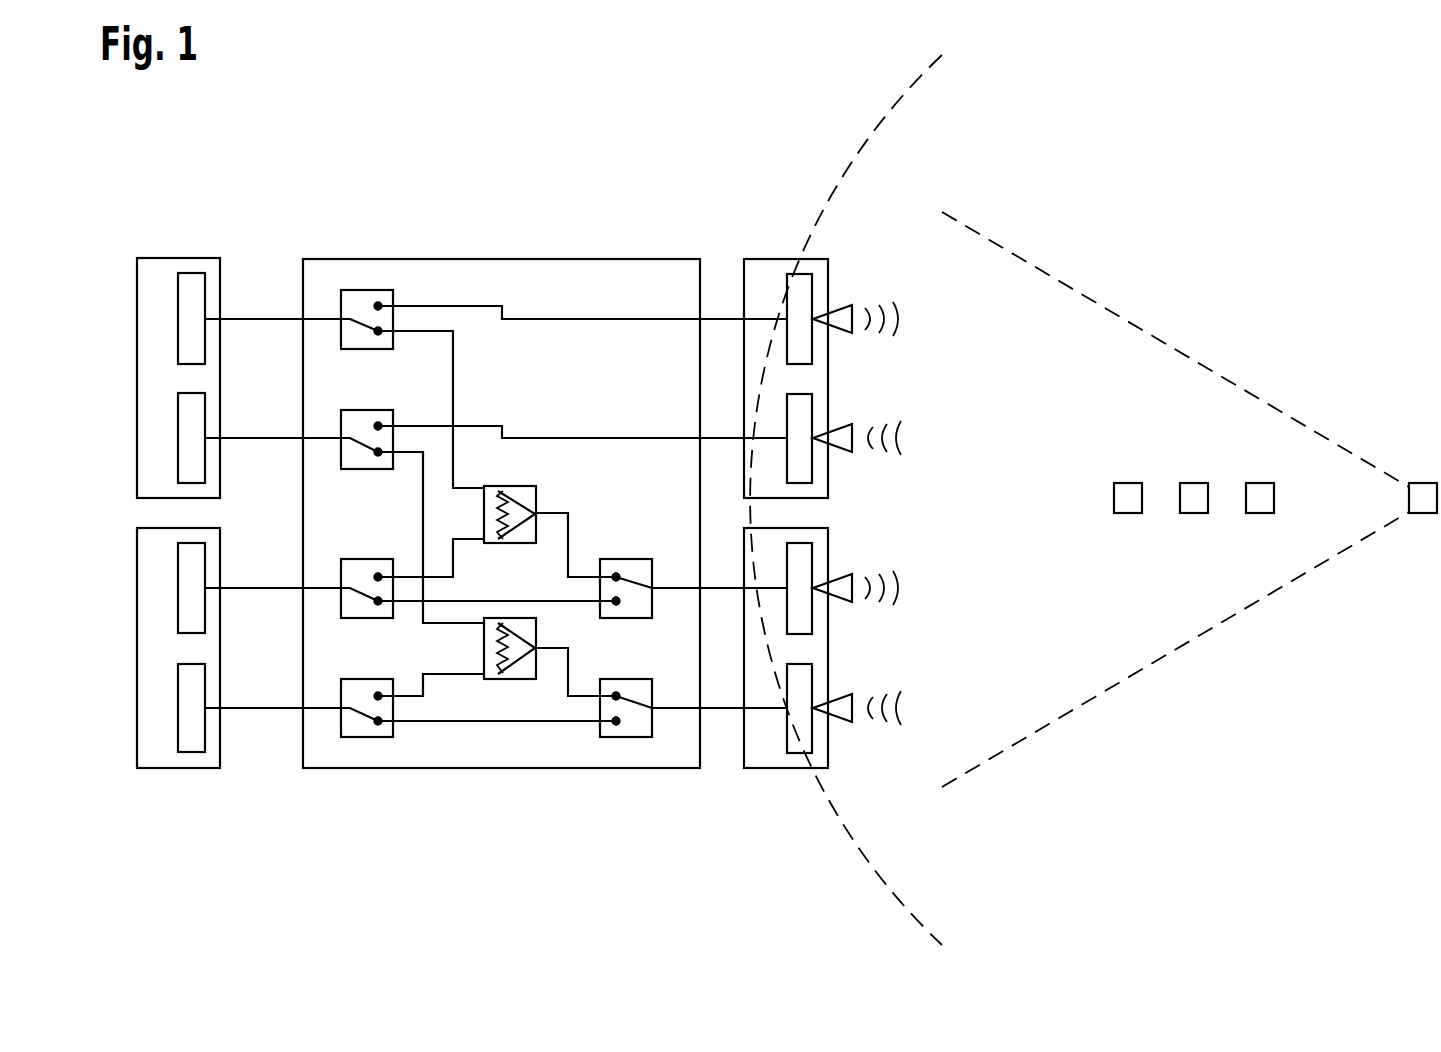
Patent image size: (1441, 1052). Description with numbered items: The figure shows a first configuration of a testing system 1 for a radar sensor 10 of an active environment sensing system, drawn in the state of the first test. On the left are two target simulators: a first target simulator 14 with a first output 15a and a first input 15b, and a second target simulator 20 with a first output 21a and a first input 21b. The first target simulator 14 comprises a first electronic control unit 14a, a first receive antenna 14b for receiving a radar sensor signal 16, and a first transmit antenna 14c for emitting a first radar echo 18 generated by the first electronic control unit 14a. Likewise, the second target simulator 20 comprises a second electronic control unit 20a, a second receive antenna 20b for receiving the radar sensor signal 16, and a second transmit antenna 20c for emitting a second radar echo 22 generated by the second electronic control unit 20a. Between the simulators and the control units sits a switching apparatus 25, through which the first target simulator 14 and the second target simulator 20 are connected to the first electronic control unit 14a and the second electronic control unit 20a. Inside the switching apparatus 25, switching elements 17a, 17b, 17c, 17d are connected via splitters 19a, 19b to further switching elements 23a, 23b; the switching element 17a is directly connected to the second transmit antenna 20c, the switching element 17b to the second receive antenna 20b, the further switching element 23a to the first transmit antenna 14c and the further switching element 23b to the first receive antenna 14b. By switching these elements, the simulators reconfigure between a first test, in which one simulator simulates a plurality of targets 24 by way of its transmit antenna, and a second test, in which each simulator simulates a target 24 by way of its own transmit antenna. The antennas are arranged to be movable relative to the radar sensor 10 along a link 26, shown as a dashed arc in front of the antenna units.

The testing system 1 is at (540, 497).
The radar sensor 10 is at (1423, 464).
The first target simulator 14 is at (151, 648).
The first electronic control unit 14a is at (786, 677).
The first receive antenna 14b is at (892, 707).
The first transmit antenna 14c is at (892, 588).
The first output 15a is at (143, 585).
The first input 15b is at (143, 705).
The radar sensor signal 16 is at (898, 579).
The switching element 17a is at (312, 308).
The switching element 17b is at (312, 429).
The switching element 17c is at (312, 577).
The switching element 17d is at (312, 697).
The first radar echo 18 is at (898, 594).
The splitter 19a is at (518, 464).
The splitter 19b is at (518, 612).
The second target simulator 20 is at (151, 378).
The second electronic control unit 20a is at (786, 350).
The second receive antenna 20b is at (892, 437).
The second transmit antenna 20c is at (892, 318).
The first output 21a is at (143, 316).
The first input 21b is at (143, 436).
The second radar echo 22 is at (898, 326).
The further switching element 23a is at (647, 564).
The further switching element 23b is at (647, 683).
The targets 24 is at (1194, 464).
The switching apparatus 25 is at (501, 485).
The link 26 is at (867, 500).